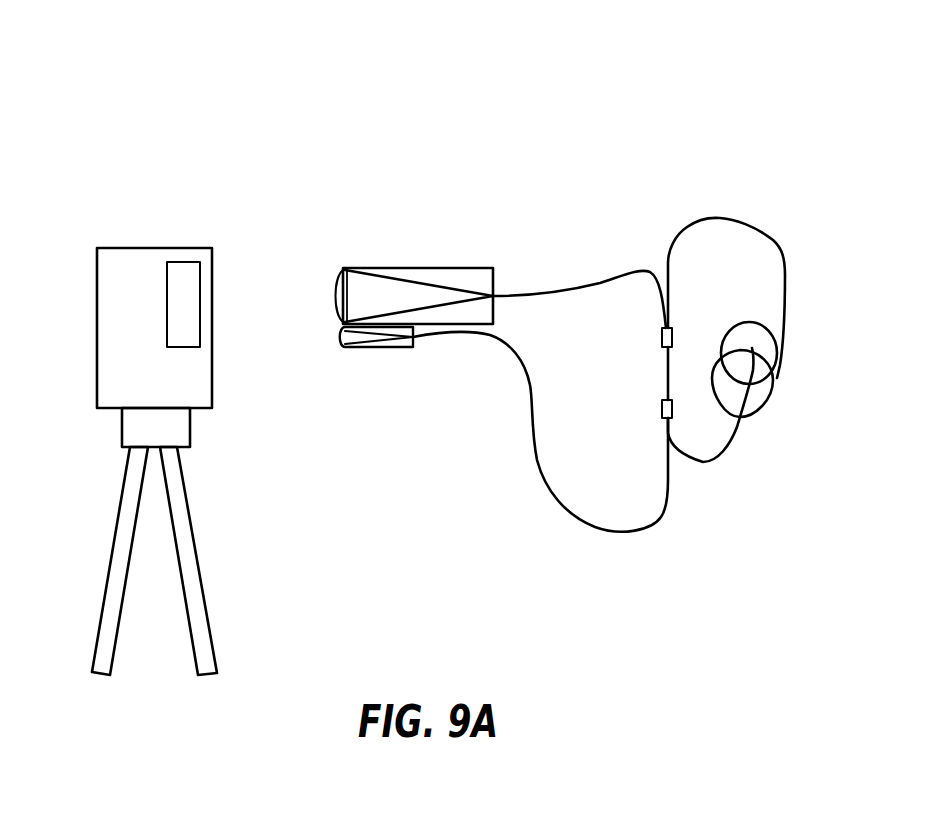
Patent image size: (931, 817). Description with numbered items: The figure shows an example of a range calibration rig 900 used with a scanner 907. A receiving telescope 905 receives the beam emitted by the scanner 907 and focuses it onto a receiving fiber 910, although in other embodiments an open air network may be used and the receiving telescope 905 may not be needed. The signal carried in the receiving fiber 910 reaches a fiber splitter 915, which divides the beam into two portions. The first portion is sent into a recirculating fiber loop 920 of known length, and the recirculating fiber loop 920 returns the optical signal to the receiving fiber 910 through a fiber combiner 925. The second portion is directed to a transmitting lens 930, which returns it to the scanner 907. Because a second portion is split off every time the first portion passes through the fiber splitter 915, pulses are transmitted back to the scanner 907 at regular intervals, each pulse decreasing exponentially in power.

The range calibration rig 900 is at (728, 131).
The receiving telescope 905 is at (418, 267).
The scanner 907 is at (155, 247).
The receiving fiber 910 is at (547, 293).
The fiber splitter 915 is at (662, 408).
The recirculating fiber loop 920 is at (753, 227).
The fiber combiner 925 is at (662, 337).
The transmitting lens 930 is at (380, 348).